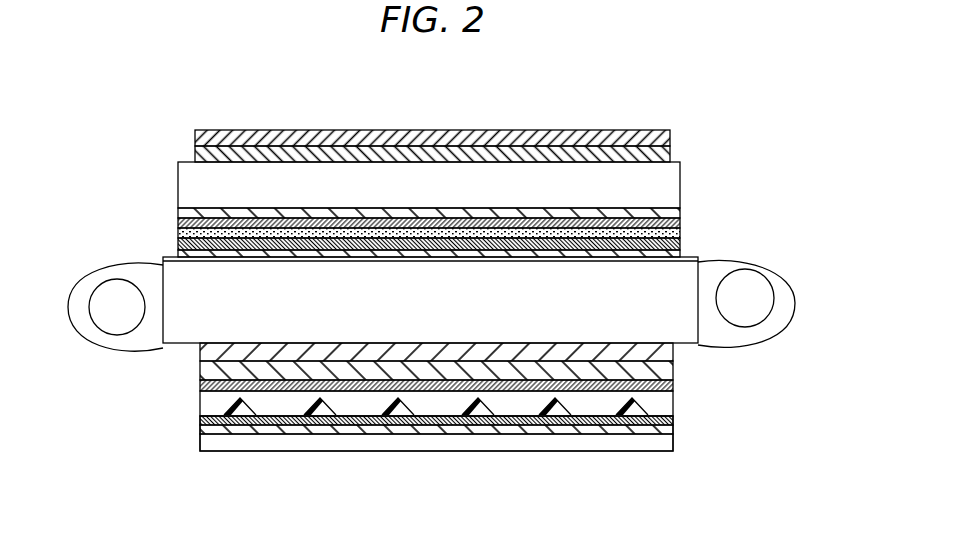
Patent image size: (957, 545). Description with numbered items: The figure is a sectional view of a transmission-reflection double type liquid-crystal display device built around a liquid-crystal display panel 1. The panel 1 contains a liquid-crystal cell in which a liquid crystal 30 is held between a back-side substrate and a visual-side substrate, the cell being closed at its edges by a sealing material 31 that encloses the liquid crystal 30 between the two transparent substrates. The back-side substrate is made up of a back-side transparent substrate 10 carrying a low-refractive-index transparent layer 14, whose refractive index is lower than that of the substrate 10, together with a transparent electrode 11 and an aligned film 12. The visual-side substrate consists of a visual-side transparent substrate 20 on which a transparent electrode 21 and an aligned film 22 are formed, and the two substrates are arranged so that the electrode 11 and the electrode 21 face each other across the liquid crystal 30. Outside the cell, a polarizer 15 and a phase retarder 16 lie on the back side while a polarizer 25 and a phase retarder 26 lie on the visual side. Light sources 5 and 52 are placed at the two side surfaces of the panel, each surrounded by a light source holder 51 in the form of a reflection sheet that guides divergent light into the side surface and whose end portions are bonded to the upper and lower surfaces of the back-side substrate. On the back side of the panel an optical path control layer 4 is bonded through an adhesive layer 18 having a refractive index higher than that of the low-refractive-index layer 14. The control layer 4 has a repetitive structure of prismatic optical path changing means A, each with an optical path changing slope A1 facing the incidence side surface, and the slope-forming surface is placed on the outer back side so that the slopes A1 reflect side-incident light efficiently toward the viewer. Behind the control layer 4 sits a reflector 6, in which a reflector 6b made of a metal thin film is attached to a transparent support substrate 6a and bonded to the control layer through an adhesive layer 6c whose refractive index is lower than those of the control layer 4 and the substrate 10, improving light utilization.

The liquid-crystal display panel 1 is at (838, 70).
The optical path control layer 4 is at (673, 405).
The light source 5 is at (117, 320).
The reflector 6 is at (383, 439).
The transparent support substrate 6a is at (200, 444).
The reflector 6b is at (200, 431).
The adhesive layer 6c is at (200, 422).
The back-side transparent substrate 10 is at (673, 348).
The transparent electrode 11 is at (680, 255).
The aligned film 12 is at (680, 245).
The low-refractive-index transparent layer 14 is at (700, 262).
The polarizer 15 is at (673, 373).
The phase retarder 16 is at (673, 362).
The adhesive layer 18 is at (673, 385).
The visual-side transparent substrate 20 is at (680, 176).
The transparent electrode 21 is at (680, 212).
The aligned film 22 is at (680, 223).
The polarizer 25 is at (670, 139).
The phase retarder 26 is at (670, 155).
The liquid crystal 30 is at (342, 232).
The sealing material 31 is at (680, 234).
The light source holder 51 is at (125, 262).
The light source 52 is at (766, 280).
The optical path changing means A is at (436, 460).
The optical path changing slope A1 is at (468, 410).